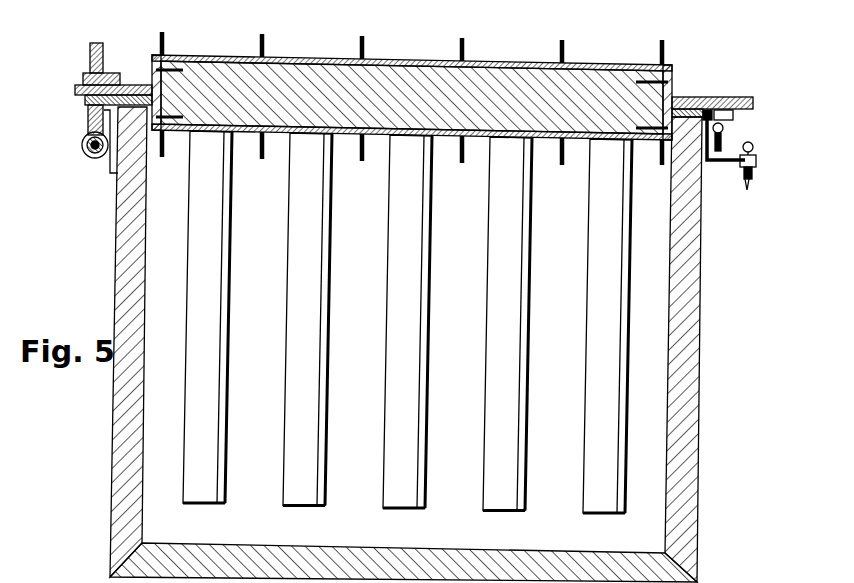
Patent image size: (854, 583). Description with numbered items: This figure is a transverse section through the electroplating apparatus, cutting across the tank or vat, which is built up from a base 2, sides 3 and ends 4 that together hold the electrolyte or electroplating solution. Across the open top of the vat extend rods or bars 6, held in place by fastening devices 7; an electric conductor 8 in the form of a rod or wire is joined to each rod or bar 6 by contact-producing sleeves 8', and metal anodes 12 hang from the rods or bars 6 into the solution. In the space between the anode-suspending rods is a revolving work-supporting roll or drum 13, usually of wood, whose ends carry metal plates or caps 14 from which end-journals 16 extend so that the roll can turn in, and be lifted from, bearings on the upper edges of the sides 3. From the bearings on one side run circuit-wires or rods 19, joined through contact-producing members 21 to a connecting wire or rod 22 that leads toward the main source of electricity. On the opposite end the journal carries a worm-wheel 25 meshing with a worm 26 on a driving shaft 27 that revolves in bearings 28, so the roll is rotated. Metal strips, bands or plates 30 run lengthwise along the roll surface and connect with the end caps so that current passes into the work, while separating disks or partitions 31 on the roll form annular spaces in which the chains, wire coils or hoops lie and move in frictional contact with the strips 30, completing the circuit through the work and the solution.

The base 2 is at (340, 560).
The sides 3 is at (698, 313).
The ends 4 is at (407, 344).
The rods or bars 6 is at (733, 115).
The fastening devices 7 is at (95, 112).
The electric conductor 8 is at (726, 140).
The contact-producing sleeves 8' is at (752, 135).
The metal anodes 12 is at (292, 307).
The work-supporting roll or drum 13 is at (414, 105).
The plates or caps 14 is at (152, 82).
The end-journal 16 is at (75, 90).
The circuit-wires or rods 19 is at (758, 163).
The contact-producing members 21 is at (742, 165).
The connecting wire or rod 22 is at (746, 184).
The worm-wheel 25 is at (90, 58).
The worm 26 is at (82, 144).
The driving shaft 27 is at (86, 158).
The bearings 28 is at (110, 158).
The metal strips, bands or plates 30 is at (312, 57).
The separating disks or partitions 31 is at (259, 35).